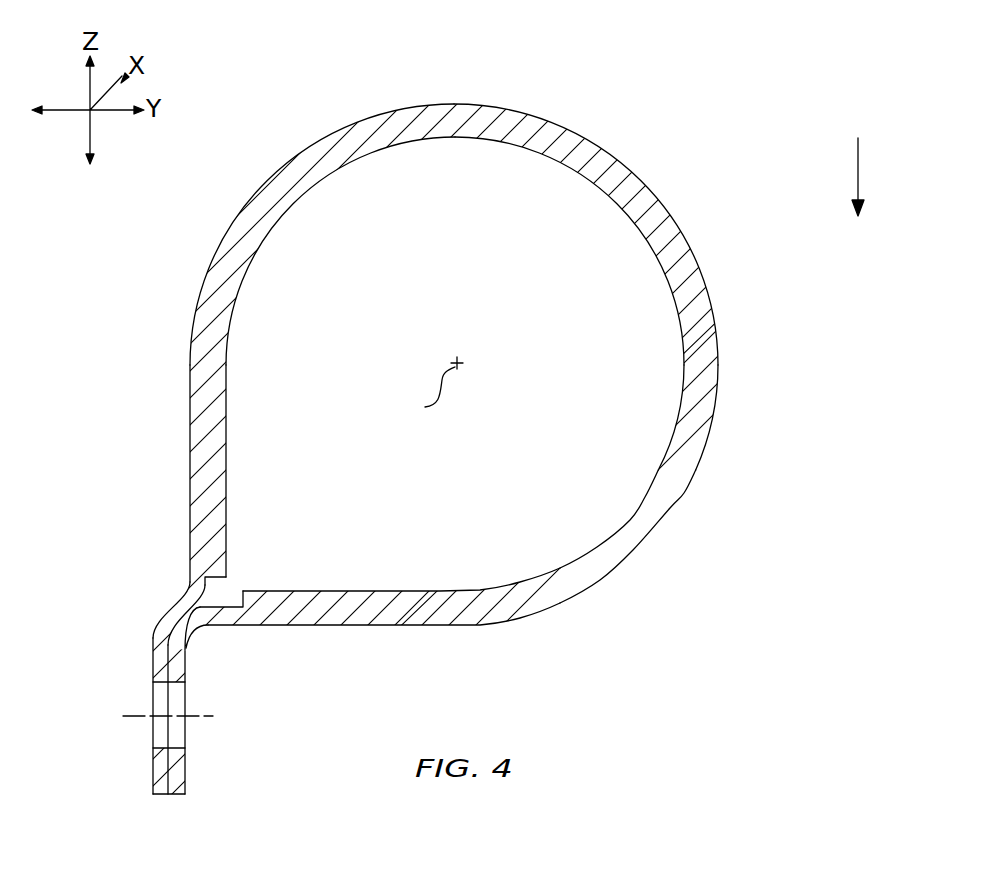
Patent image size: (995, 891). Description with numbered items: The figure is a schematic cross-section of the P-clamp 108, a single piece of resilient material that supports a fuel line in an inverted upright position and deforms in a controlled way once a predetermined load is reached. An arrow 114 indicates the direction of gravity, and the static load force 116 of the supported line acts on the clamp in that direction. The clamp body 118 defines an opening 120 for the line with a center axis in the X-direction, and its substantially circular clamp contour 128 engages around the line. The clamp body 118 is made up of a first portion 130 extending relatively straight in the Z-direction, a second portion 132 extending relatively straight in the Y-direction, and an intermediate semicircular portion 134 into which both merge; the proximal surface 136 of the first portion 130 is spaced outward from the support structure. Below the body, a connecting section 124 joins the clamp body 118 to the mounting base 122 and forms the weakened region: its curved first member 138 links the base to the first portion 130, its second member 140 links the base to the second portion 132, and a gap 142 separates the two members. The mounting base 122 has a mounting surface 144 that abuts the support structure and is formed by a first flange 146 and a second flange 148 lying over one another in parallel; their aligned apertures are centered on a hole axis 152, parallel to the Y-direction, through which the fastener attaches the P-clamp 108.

The P-clamp 108 is at (632, 89).
The arrow indicating direction of gravity 114 is at (857, 163).
The static load force 116 is at (858, 177).
The clamp body 118 is at (658, 193).
The opening 120 is at (547, 337).
The mounting base 122 is at (138, 801).
The connecting section 124 is at (170, 581).
The clamp contour 128 is at (677, 457).
The first portion 130 is at (200, 328).
The second portion 132 is at (447, 612).
The semicircular portion 134 is at (700, 342).
The proximal surface 136 is at (183, 395).
The first member 138 is at (168, 608).
The second member 140 is at (197, 640).
The gap 142 is at (219, 594).
The mounting surface 144 is at (152, 670).
The first flange 146 is at (163, 785).
The second flange 148 is at (187, 782).
The hole axis 152 is at (207, 722).